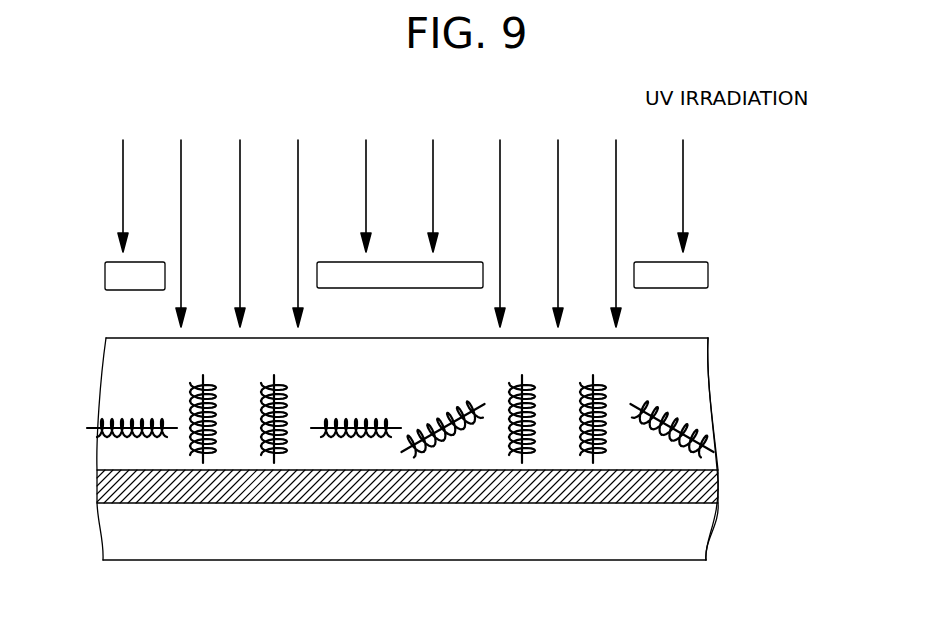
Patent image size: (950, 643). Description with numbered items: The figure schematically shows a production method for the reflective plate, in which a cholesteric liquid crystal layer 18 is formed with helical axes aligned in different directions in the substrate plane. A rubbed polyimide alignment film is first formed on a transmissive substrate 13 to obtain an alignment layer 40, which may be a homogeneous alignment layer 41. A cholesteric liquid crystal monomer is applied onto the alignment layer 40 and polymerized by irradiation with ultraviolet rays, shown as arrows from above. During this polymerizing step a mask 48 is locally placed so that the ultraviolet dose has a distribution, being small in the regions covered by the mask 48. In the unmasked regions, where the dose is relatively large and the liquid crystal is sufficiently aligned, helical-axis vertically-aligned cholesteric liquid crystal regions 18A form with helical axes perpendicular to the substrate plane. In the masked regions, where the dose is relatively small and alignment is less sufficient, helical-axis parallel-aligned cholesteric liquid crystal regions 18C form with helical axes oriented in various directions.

The transmissive substrate 13 is at (693, 530).
The cholesteric liquid crystal layer 18 is at (680, 357).
The helical-axis vertically-aligned cholesteric liquid crystal regions 18A is at (303, 565).
The helical-axis parallel-aligned cholesteric liquid crystal regions 18C is at (487, 565).
The alignment layer 40 is at (730, 486).
The homogeneous alignment layer 41 is at (577, 503).
The mask 48 is at (112, 282).